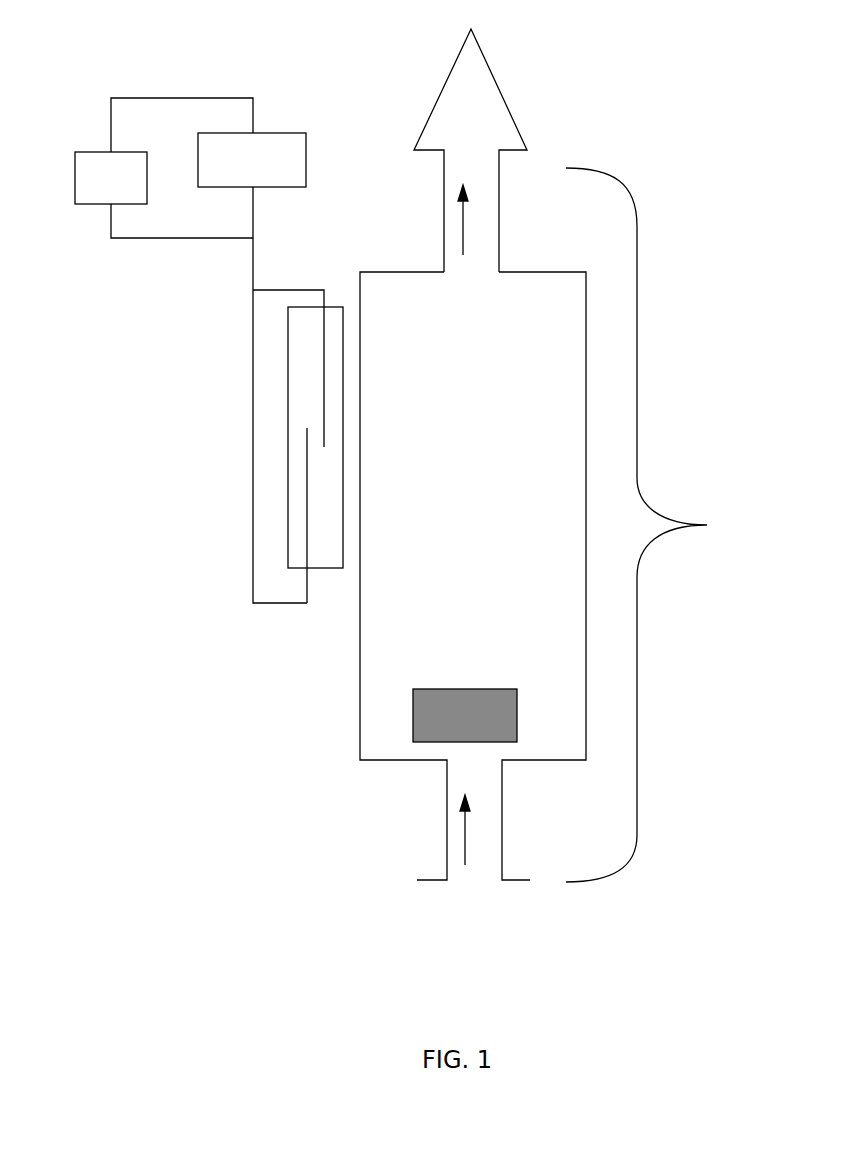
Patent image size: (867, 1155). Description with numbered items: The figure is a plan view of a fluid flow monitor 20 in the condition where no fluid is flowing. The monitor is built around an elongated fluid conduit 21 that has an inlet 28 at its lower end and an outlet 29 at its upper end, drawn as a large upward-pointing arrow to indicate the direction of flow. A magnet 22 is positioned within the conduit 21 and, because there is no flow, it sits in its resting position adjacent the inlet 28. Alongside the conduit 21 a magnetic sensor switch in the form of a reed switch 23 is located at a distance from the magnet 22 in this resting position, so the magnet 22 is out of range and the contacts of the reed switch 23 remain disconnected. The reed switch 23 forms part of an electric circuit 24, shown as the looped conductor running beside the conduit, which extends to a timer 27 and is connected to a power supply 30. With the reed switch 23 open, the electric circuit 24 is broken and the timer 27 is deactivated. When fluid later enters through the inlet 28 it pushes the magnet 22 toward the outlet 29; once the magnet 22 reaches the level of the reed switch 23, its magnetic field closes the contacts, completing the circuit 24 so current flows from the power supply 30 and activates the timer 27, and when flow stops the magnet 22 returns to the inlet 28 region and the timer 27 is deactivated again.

The fluid flow monitor 20 is at (159, 735).
The elongated fluid conduit 21 is at (556, 525).
The magnet 22 is at (446, 704).
The reed switch 23 is at (288, 412).
The electric circuit 24 is at (253, 290).
The timer 27 is at (306, 165).
The inlet 28 is at (475, 868).
The outlet 29 is at (470, 150).
The power supply 30 is at (94, 169).